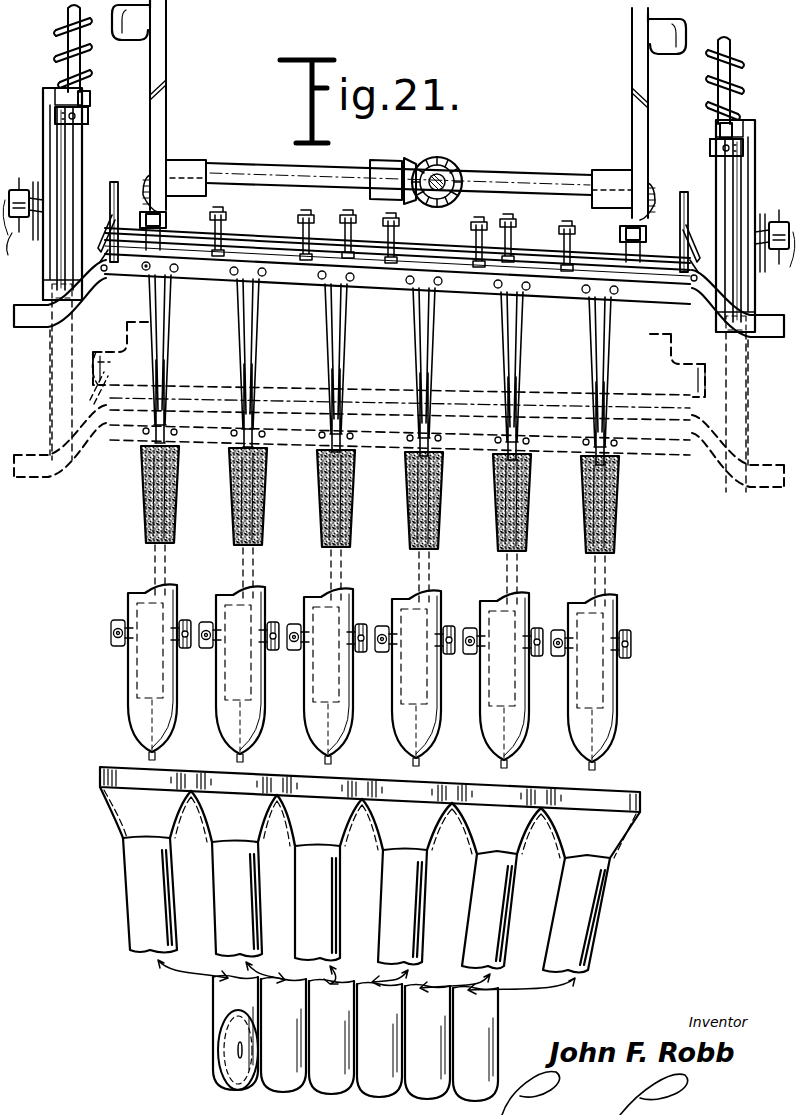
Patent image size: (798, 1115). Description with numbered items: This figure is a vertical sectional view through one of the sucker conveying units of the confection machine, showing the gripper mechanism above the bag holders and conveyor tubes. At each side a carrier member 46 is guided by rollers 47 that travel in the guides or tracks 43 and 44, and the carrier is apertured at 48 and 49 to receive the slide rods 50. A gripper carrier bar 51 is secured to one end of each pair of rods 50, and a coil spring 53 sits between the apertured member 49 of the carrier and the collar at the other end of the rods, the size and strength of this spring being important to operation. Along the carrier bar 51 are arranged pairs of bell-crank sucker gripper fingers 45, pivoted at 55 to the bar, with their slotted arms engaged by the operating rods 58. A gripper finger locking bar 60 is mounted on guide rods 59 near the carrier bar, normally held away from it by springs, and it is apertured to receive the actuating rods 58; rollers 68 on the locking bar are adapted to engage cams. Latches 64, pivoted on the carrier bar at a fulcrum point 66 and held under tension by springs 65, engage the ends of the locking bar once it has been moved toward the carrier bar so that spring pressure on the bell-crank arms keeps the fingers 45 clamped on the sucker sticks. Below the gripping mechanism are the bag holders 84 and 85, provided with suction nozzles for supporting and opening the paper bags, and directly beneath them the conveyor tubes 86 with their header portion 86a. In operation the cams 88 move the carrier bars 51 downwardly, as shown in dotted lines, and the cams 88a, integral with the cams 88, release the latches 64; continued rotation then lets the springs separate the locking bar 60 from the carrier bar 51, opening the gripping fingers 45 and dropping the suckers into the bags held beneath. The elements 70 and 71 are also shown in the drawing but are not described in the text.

The guide or track 43 is at (19, 180).
The guide or track 44 is at (395, 268).
The sucker gripper fingers 45 is at (330, 364).
The carrier member 46 is at (45, 131).
The rollers 47 is at (395, 384).
The aperture 48 is at (46, 304).
The aperture (apertured member) 49 is at (92, 98).
The slide rods 50 is at (76, 156).
The gripper carrier bar 51 is at (290, 282).
The coil spring 53 is at (58, 62).
The pivot 55 is at (232, 275).
The operating rods 58 is at (222, 230).
The guide rods 59 is at (348, 236).
The gripper finger locking bar 60 is at (258, 236).
The latches 64 is at (112, 196).
The springs 65 is at (110, 230).
The fulcrum point 66 is at (110, 252).
The rollers 68 is at (168, 220).
The bearing block 70 is at (708, 150).
The pivot block 71 is at (60, 100).
The bag holder 84 is at (188, 620).
The bag holder 85 is at (206, 650).
The conveyor tubes 86 is at (218, 883).
The hood header 86a is at (300, 780).
The cams 88 is at (153, 128).
The cams 88a is at (138, 24).